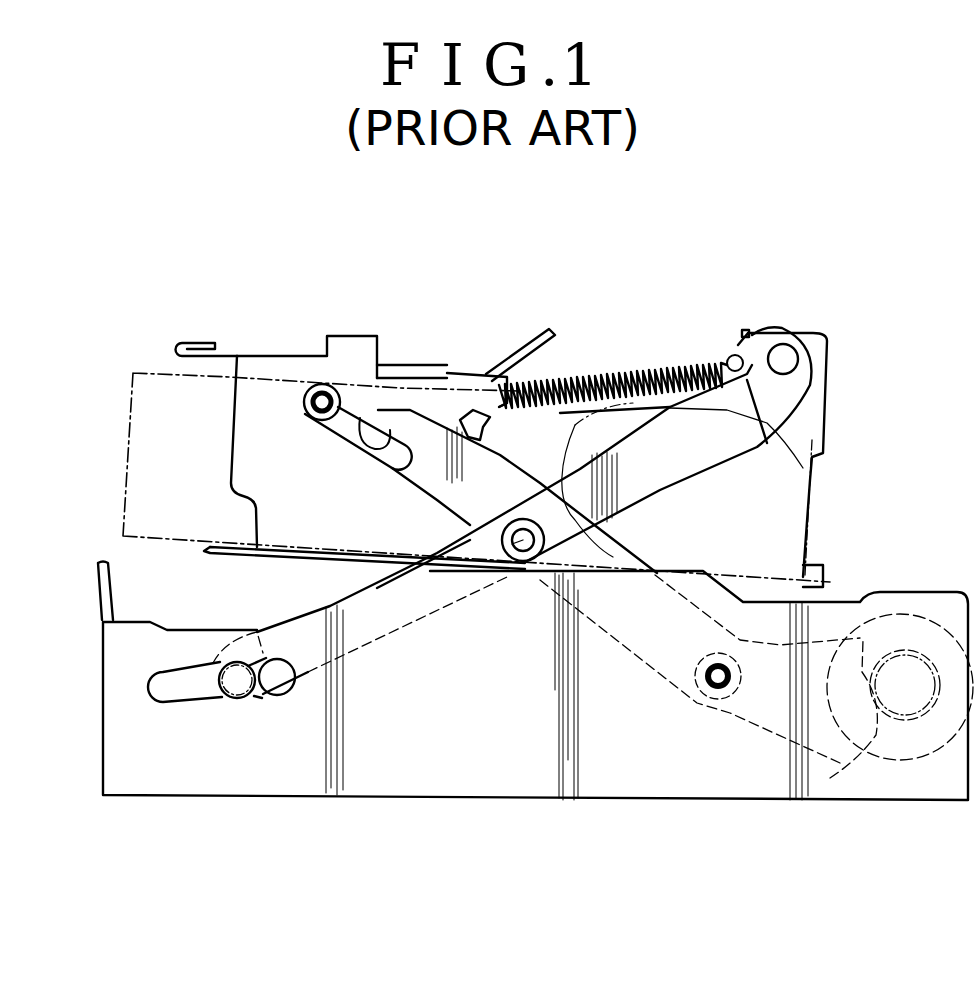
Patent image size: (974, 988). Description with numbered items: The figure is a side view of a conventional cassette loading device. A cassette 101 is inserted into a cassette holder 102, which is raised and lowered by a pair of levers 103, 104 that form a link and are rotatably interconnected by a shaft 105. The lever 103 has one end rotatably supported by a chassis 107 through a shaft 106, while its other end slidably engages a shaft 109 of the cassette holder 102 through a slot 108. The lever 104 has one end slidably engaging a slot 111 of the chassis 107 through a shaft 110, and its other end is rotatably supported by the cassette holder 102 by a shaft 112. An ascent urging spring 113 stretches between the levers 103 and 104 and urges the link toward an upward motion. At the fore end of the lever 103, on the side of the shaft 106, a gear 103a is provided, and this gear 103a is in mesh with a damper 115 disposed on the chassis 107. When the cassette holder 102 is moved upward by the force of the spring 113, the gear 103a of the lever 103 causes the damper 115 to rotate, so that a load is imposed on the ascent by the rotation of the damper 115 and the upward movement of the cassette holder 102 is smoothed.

The cassette 101 is at (165, 400).
The cassette holder 102 is at (258, 413).
The lever 103 is at (433, 443).
The gear 103a is at (876, 745).
The lever 104 is at (655, 473).
The shaft 105 is at (517, 541).
The shaft 106 is at (718, 682).
The chassis 107 is at (413, 737).
The slot 108 is at (396, 395).
The shaft 109 is at (327, 403).
The shaft 110 is at (230, 684).
The slot 111 is at (176, 690).
The shaft 112 is at (786, 352).
The ascent urging spring 113 is at (607, 377).
The damper 115 is at (908, 672).